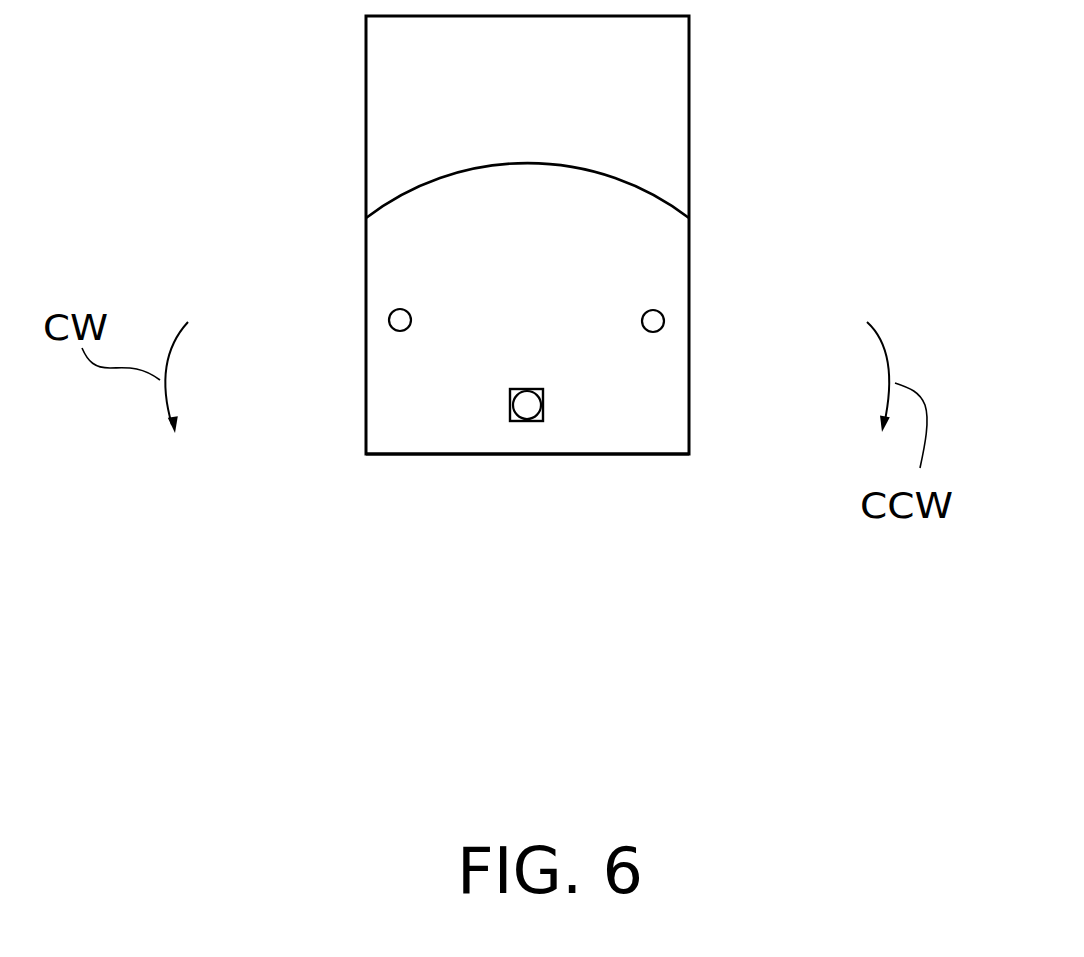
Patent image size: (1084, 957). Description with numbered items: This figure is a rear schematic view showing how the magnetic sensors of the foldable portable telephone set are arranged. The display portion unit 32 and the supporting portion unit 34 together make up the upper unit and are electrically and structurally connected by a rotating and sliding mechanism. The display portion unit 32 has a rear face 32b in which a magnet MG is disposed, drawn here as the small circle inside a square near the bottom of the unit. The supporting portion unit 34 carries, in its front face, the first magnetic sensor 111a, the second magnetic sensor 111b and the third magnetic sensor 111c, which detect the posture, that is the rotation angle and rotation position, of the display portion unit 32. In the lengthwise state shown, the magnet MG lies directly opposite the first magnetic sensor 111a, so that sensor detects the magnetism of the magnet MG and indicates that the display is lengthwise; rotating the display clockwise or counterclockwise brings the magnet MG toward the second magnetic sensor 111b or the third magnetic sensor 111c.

The display portion unit 32 is at (385, 132).
The rear face 32b is at (387, 178).
The supporting portion unit 34 is at (658, 395).
The first magnetic sensor 111a is at (527, 406).
The second magnetic sensor 111b is at (400, 319).
The third magnetic sensor 111c is at (660, 307).
The magnet MG is at (527, 406).